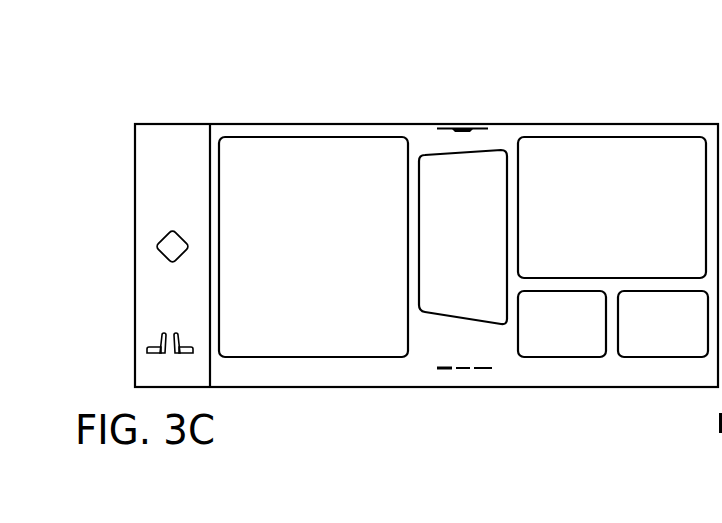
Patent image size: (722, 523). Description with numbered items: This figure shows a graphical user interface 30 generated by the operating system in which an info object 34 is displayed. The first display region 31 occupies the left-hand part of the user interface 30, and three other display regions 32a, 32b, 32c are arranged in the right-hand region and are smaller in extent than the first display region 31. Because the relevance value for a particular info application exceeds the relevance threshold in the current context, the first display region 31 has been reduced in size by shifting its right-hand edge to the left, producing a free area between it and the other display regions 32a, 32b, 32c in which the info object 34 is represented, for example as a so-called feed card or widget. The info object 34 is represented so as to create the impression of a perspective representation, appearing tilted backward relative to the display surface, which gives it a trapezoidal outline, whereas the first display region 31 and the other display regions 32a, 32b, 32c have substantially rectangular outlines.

The graphical user interface 30 is at (639, 123).
The first display region 31 is at (327, 247).
The other display region 32a is at (639, 219).
The other display region 32b is at (588, 336).
The other display region 32c is at (688, 336).
The info object 34 is at (479, 247).